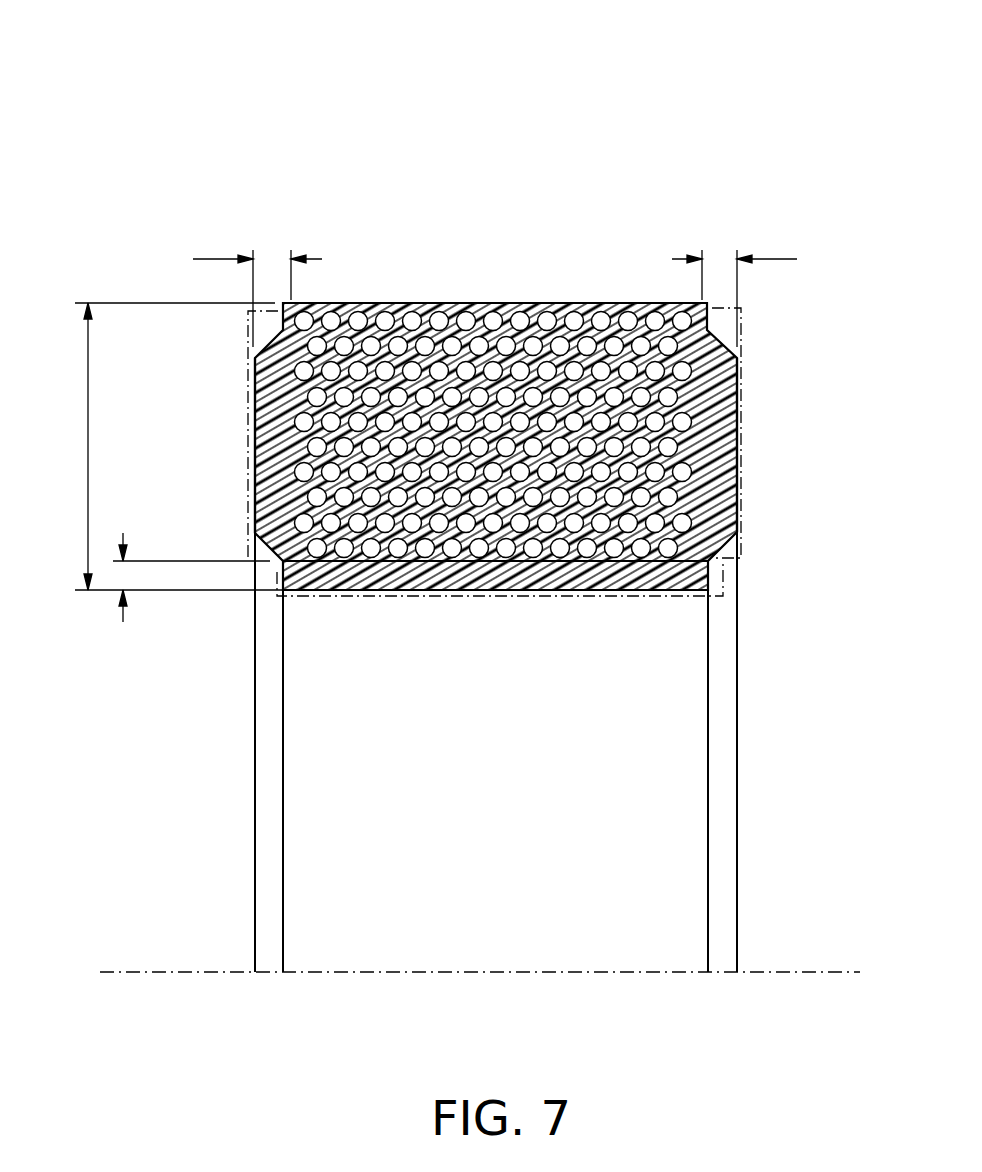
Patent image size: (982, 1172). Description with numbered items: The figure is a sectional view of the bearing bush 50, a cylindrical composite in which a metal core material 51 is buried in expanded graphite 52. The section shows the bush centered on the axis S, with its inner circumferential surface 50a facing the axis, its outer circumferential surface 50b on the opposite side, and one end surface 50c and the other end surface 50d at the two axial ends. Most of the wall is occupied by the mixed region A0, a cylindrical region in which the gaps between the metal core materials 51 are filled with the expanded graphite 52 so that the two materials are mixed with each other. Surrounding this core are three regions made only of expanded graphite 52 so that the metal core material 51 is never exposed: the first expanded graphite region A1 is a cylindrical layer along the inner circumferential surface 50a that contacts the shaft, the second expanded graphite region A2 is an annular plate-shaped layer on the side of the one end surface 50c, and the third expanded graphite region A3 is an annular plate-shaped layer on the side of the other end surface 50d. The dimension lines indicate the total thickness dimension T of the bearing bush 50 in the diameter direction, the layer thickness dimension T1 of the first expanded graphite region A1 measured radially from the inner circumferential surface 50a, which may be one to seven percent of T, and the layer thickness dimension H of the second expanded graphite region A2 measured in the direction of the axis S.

The bearing bush 50 is at (620, 160).
The metal core material 51 is at (365, 318).
The expanded graphite 52 is at (483, 303).
The inner circumferential surface 50a is at (400, 596).
The outer circumferential surface 50b is at (433, 303).
The one end surface 50c is at (737, 427).
The other end surface 50d is at (254, 403).
The mixed region A0 is at (537, 303).
The first expanded graphite region A1 is at (528, 597).
The second expanded graphite region A2 is at (741, 482).
The third expanded graphite region A3 is at (247, 460).
The total thickness dimension T is at (168, 446).
The layer thickness dimension T1 is at (175, 590).
The layer thickness dimension H is at (495, 287).
The axis S is at (187, 968).